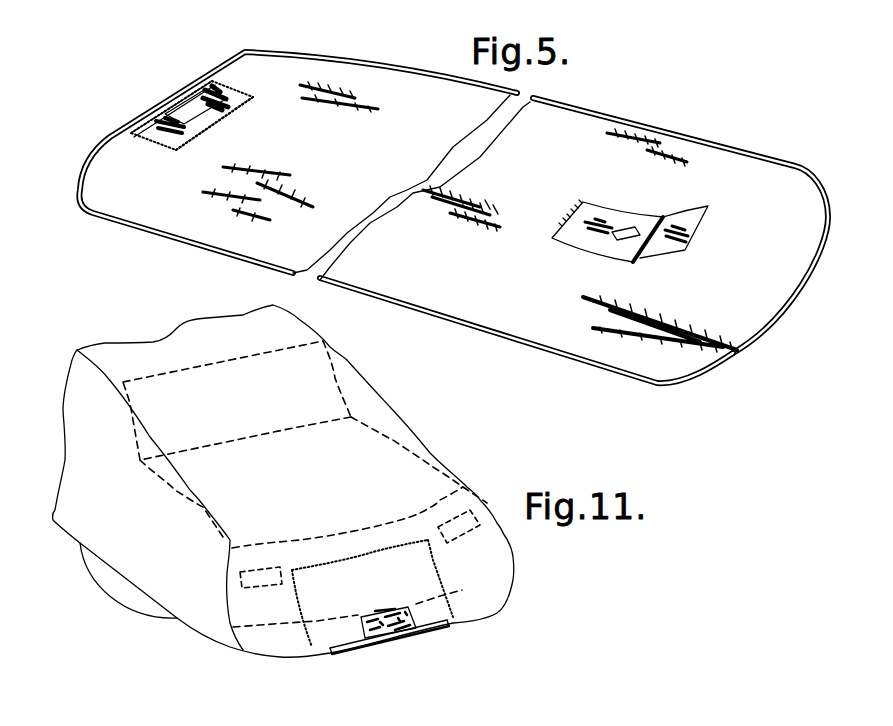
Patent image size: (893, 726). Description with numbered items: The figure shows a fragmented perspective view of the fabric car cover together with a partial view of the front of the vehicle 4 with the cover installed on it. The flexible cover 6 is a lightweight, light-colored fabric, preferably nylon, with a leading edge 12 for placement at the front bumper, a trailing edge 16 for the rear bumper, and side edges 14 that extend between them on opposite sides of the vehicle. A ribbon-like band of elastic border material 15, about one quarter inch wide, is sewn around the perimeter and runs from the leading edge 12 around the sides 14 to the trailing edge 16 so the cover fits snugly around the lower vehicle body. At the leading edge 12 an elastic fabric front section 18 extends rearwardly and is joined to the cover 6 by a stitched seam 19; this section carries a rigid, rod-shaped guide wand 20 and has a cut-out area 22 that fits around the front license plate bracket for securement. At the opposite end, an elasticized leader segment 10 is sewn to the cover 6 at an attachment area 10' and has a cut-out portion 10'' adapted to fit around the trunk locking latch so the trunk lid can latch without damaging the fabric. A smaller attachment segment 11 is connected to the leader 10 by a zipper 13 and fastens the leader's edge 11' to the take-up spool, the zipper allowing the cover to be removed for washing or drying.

In FIG. 11, the vehicle 4 is at (393, 437).
In FIG. 5, the flexible cover portion 6 is at (381, 168).
In FIG. 11, the flexible cover portion 6 is at (310, 482).
In FIG. 5, the elasticized leader segment 10 is at (607, 239).
In FIG. 5, the attachment area 10' is at (562, 202).
In FIG. 5, the cut-out portion 10'' is at (615, 197).
In FIG. 5, the attachment segment 11 is at (674, 248).
In FIG. 5, the edge 11' is at (736, 195).
In FIG. 5, the leading edge 12 is at (114, 145).
In FIG. 11, the leading edge 12 is at (473, 610).
In FIG. 5, the zipper 13 is at (662, 215).
In FIG. 5, the side edges 14 is at (410, 74).
In FIG. 11, the side edges 14 is at (110, 567).
In FIG. 5, the band of elastic border material 15 is at (246, 53).
In FIG. 5, the trailing edge 16 is at (757, 326).
In FIG. 5, the elastic fabric front section 18 is at (228, 108).
In FIG. 11, the elastic fabric front section 18 is at (378, 583).
In FIG. 5, the stitched seam 19 is at (187, 138).
In FIG. 11, the stitched seam 19 is at (437, 572).
In FIG. 5, the guide wand 20 is at (167, 96).
In FIG. 11, the guide wand 20 is at (402, 640).
In FIG. 5, the cut-out area 22 is at (198, 82).
In FIG. 11, the cut-out area 22 is at (363, 630).